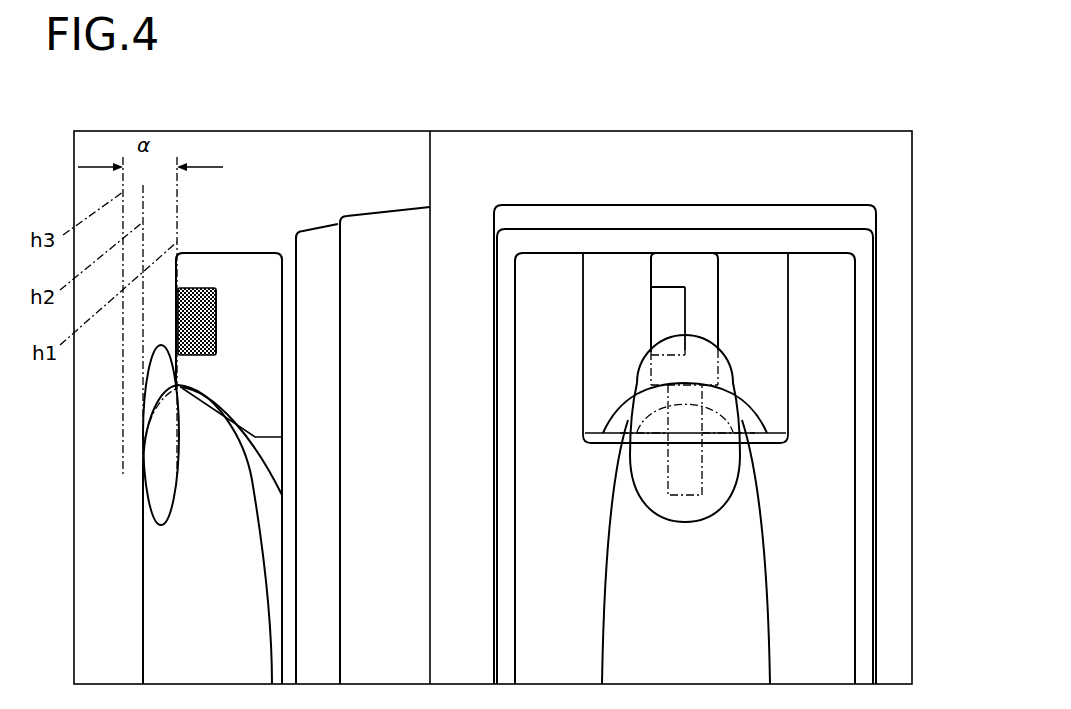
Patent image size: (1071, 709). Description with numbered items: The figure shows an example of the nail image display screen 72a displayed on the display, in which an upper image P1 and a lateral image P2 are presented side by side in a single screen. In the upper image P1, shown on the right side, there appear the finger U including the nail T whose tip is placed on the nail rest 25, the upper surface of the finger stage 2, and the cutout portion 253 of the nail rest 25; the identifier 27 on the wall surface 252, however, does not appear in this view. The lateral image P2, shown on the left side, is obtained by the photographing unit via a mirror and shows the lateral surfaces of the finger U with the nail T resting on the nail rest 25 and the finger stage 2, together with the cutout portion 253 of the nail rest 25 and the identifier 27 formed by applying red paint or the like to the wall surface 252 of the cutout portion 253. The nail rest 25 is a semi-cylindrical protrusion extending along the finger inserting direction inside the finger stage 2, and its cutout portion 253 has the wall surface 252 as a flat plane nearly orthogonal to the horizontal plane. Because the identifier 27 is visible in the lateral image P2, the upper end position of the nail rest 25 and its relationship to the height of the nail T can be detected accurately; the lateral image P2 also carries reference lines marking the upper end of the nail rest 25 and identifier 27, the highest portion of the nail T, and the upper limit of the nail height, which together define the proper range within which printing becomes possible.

The finger stage 2 is at (362, 198).
The nail image display screen 72a is at (810, 131).
The nail rest 25 is at (238, 255).
The wall surface 252 is at (206, 288).
The cutout portion 253 is at (669, 300).
The identifier 27 is at (218, 330).
The nail T is at (145, 488).
The finger U is at (145, 565).
The upper image P1 is at (527, 153).
The lateral image P2 is at (322, 152).